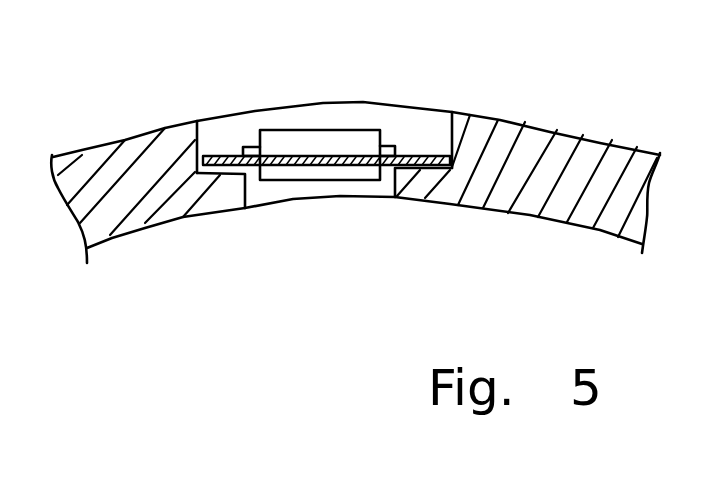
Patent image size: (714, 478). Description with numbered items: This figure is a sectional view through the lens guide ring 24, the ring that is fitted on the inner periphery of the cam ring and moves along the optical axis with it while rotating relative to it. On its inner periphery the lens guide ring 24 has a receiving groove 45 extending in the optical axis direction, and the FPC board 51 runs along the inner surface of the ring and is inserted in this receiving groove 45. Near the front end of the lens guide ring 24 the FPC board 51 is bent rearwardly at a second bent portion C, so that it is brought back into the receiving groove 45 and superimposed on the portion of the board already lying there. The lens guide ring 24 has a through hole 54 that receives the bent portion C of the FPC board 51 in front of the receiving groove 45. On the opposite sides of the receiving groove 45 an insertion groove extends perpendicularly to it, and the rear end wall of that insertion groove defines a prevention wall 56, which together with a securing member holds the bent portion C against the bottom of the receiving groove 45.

The lens guide ring 24 is at (560, 168).
The through hole 54 is at (323, 118).
The second bent portion C is at (365, 137).
The FPC board 51 is at (320, 175).
The receiving groove 45 is at (368, 188).
The prevention wall 56 is at (220, 198).